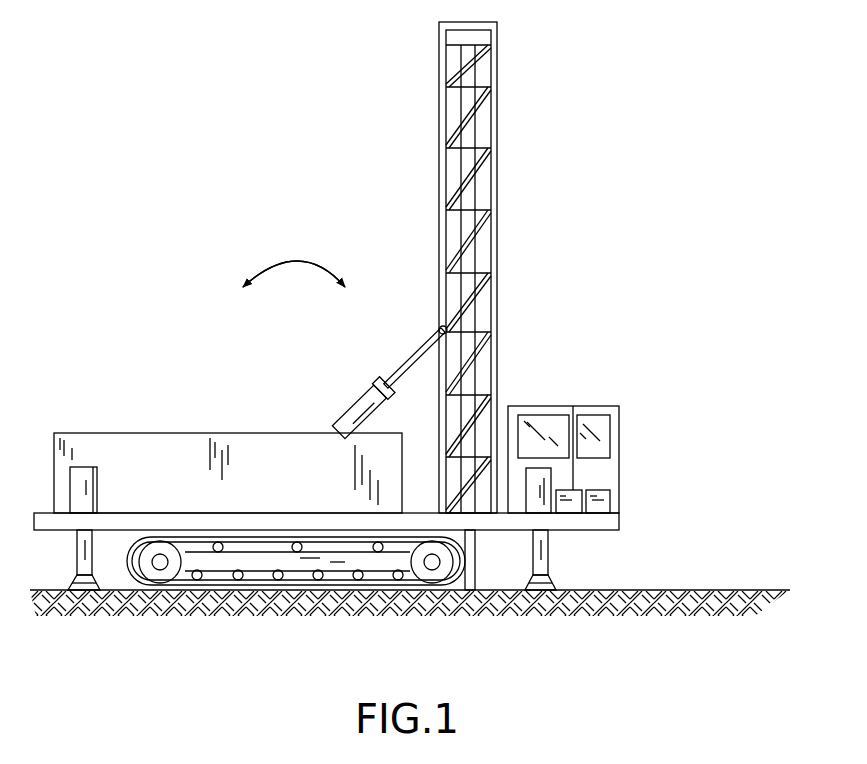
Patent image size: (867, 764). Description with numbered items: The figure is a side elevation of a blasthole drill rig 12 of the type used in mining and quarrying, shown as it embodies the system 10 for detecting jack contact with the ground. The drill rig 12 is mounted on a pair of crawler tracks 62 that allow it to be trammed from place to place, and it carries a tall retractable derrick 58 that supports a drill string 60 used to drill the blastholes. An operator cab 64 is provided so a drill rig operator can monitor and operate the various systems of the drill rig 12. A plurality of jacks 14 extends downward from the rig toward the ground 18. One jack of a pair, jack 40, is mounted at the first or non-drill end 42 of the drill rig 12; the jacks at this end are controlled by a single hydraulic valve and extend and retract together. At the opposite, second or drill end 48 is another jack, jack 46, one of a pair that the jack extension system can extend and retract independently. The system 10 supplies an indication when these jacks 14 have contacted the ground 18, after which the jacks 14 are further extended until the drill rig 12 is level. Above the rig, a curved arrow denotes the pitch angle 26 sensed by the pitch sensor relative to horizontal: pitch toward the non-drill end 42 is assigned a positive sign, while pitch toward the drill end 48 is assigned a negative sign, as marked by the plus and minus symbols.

The system for detecting jack contact with the ground 10 is at (134, 126).
The drill rig 12 is at (112, 431).
The jacks 14 is at (100, 483).
The ground 18 is at (685, 588).
The pitch angle 26 is at (291, 256).
The non-drill end jack 40 is at (73, 585).
The non-drill end 42 is at (53, 475).
The drill end jack 46 is at (556, 585).
The drill end 48 is at (610, 503).
The retractable derrick 58 is at (437, 48).
The drill string 60 is at (473, 135).
The crawler tracks 62 is at (269, 529).
The operator cab 64 is at (619, 460).